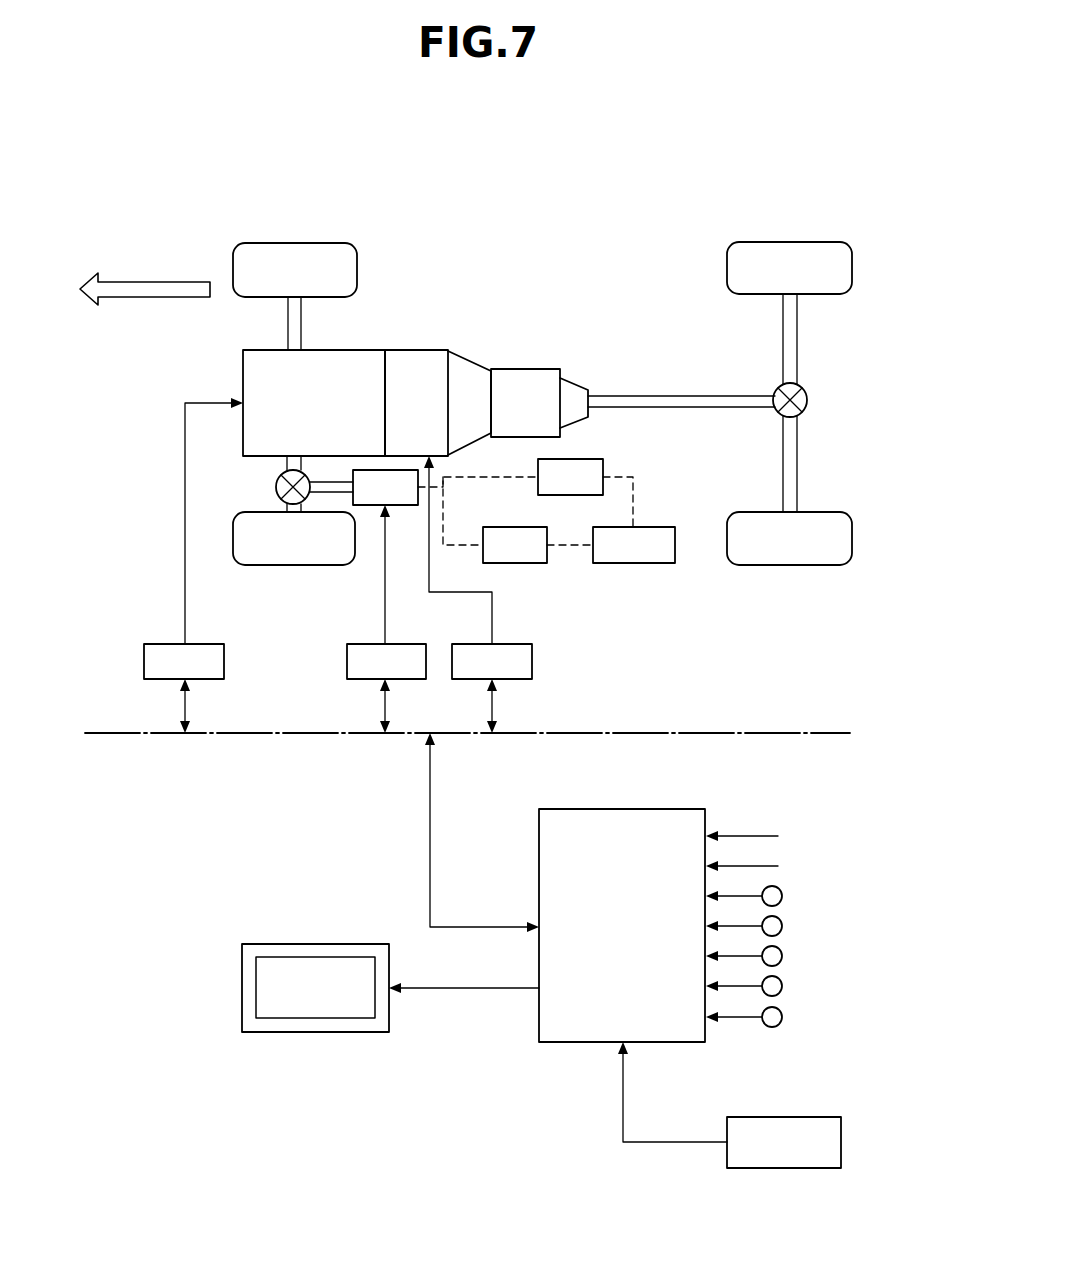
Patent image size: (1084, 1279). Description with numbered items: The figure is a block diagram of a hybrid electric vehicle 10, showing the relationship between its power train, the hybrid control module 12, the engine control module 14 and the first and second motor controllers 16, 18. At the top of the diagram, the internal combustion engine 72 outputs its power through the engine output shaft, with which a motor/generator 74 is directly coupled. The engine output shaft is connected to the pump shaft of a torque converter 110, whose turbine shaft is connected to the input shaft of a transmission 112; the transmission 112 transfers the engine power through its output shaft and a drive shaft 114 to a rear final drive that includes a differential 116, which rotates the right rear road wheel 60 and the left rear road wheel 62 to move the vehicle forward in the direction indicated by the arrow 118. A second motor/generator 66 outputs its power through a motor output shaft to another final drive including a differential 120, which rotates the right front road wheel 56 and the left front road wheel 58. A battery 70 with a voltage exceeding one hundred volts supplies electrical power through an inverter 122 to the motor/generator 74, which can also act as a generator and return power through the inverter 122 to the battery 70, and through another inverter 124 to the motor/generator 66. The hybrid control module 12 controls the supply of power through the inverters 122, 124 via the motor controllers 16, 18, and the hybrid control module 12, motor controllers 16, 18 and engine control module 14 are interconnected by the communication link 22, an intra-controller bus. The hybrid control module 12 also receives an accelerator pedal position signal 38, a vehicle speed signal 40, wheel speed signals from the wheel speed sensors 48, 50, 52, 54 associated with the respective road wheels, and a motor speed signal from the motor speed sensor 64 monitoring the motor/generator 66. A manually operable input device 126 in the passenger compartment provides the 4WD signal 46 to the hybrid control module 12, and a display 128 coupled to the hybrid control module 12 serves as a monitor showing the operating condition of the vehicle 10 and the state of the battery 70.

The hybrid electric vehicle 10 is at (587, 258).
The hybrid control module 12 is at (663, 809).
The engine control module 14 is at (144, 662).
The first motor controller 16 is at (533, 662).
The second motor controller 18 is at (347, 662).
The communication link 22 is at (188, 706).
The accelerator pedal position signal 38 is at (772, 835).
The vehicle speed signal 40 is at (772, 865).
The 4WD signal 46 is at (668, 1142).
The wheel speed sensor 48 is at (782, 894).
The wheel speed sensor 50 is at (782, 924).
The wheel speed sensor 52 is at (782, 954).
The wheel speed sensor 54 is at (782, 984).
The right front road wheel 56 is at (296, 243).
The left front road wheel 58 is at (275, 565).
The right rear road wheel 60 is at (788, 242).
The left rear road wheel 62 is at (789, 565).
The motor speed sensor 64 is at (782, 1015).
The motor/generator 66 is at (406, 506).
The battery 70 is at (641, 563).
The internal combustion engine 72 is at (243, 368).
The motor/generator 74 is at (418, 351).
The torque converter 110 is at (470, 361).
The transmission 112 is at (535, 369).
The drive shaft 114 is at (683, 396).
The differential 116 is at (808, 398).
The arrow 118 is at (146, 278).
The differential 120 is at (276, 487).
The inverter 122 is at (603, 467).
The inverter 124 is at (532, 563).
The input device 126 is at (785, 1168).
The display 128 is at (242, 980).